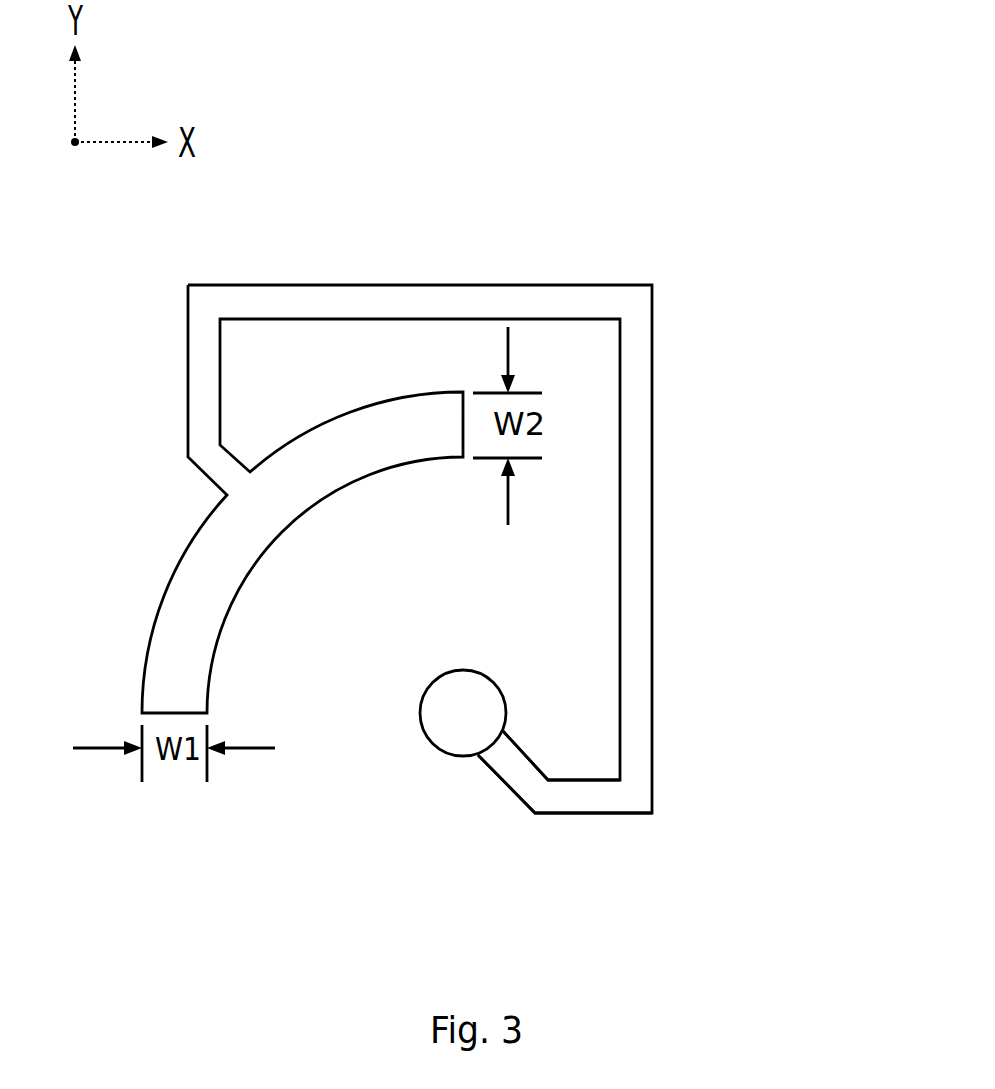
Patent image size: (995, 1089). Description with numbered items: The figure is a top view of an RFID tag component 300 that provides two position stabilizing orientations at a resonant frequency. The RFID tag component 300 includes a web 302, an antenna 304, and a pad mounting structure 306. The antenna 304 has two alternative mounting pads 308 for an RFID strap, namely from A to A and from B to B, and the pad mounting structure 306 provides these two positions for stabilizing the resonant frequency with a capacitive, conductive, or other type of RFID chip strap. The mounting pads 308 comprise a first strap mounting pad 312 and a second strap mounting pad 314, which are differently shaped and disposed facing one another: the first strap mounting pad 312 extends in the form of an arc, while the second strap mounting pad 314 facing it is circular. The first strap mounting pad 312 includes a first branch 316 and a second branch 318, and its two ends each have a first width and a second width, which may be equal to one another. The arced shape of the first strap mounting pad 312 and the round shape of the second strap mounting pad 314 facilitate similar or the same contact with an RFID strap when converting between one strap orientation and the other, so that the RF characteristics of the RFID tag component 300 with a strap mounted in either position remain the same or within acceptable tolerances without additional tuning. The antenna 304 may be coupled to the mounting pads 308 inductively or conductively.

The RFID tag component 300 is at (702, 213).
The web 302 is at (565, 582).
The antenna 304 is at (637, 423).
The pad mounting structure 306 is at (577, 720).
The mounting pads 308 is at (185, 630).
The first strap mounting pad 312 is at (207, 520).
The second strap mounting pad 314 is at (490, 688).
The first branch 316 is at (375, 405).
The second branch 318 is at (208, 677).